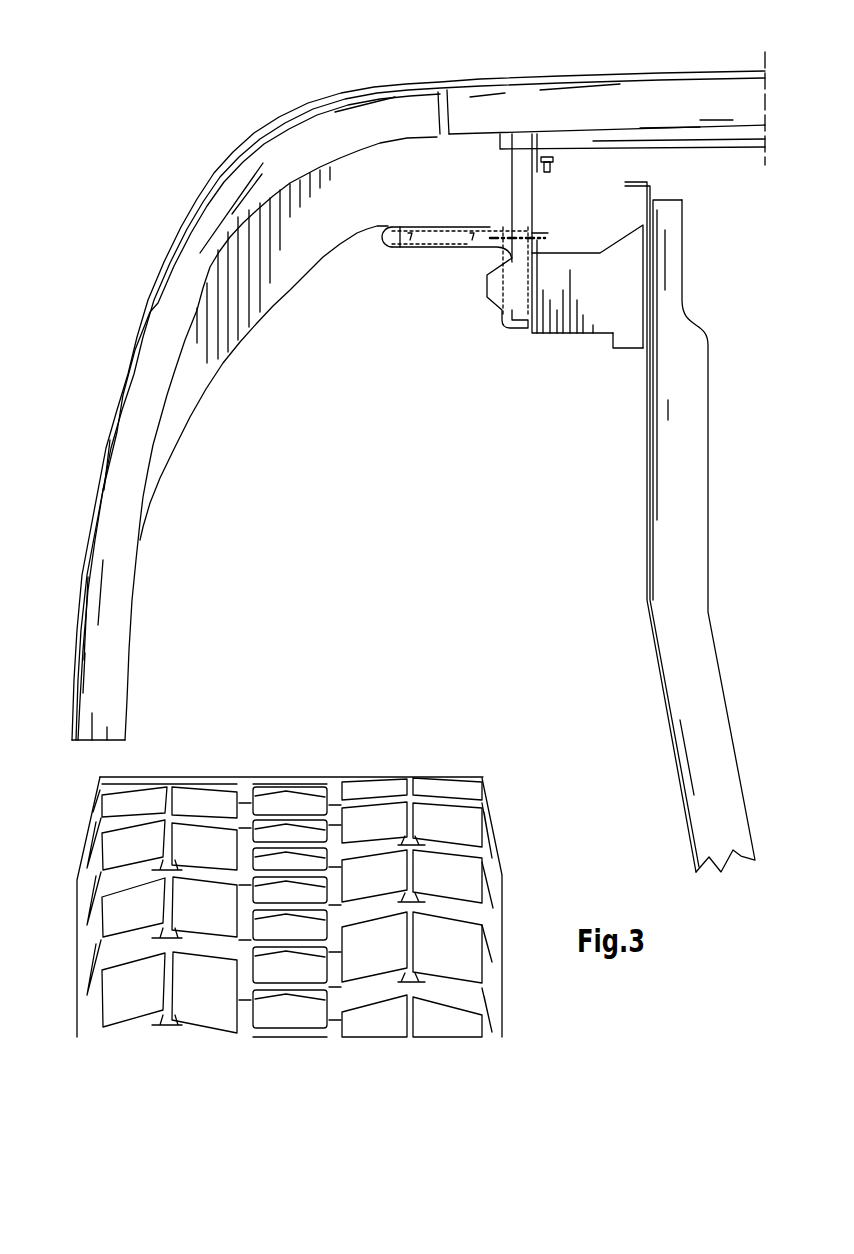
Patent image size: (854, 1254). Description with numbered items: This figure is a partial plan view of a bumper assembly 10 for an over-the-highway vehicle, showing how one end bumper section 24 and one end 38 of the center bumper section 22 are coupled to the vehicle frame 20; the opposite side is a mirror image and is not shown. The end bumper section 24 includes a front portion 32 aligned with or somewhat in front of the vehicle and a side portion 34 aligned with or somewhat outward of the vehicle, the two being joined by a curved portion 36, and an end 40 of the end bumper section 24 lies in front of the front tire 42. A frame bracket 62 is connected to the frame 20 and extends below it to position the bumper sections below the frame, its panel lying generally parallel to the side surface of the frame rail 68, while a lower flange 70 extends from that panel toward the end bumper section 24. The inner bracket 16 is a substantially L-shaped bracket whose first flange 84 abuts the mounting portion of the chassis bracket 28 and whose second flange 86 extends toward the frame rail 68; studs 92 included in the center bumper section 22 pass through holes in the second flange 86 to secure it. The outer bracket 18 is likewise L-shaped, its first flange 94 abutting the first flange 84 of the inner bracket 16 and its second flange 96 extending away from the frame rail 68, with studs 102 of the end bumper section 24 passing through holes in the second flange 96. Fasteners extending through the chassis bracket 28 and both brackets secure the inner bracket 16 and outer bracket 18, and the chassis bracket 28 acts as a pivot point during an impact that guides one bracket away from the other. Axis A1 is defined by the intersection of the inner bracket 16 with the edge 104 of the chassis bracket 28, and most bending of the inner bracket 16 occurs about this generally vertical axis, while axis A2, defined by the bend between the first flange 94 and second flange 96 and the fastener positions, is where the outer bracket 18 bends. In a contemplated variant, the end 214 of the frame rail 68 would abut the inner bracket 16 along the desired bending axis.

The bumper assembly 10 is at (431, 34).
The inner bracket 16 is at (525, 198).
The outer bracket 18 is at (446, 248).
The frame 20 is at (693, 262).
The center bumper section 22 is at (591, 76).
The end bumper section 24 is at (148, 287).
The chassis bracket 28 is at (580, 300).
The front portion 32 is at (380, 90).
The side portion 34 is at (84, 633).
The curved portion 36 is at (184, 228).
The end of the center bumper section 38 is at (537, 106).
The end of the end bumper section 40 is at (97, 740).
The front tire 42 is at (290, 777).
The frame bracket 62 is at (660, 185).
The frame rail 68 is at (687, 423).
The lower flange 70 is at (628, 348).
The first flange 84 is at (521, 281).
The second flange 86 is at (560, 158).
The studs 92 is at (535, 175).
The first flange 94 is at (503, 322).
The second flange 96 is at (398, 248).
The studs 102 is at (418, 240).
The edge 104 is at (548, 232).
The end of the frame rail 214 is at (672, 196).
The axis A1 is at (542, 228).
The axis A2 is at (492, 226).